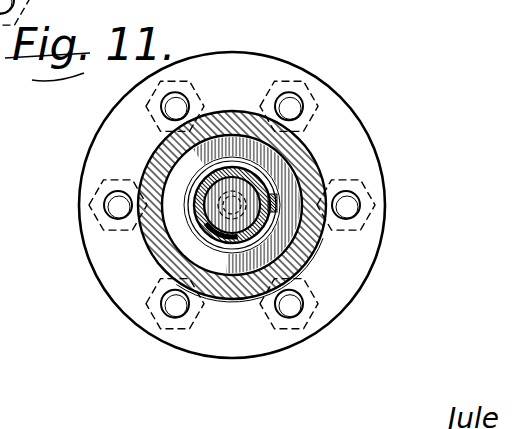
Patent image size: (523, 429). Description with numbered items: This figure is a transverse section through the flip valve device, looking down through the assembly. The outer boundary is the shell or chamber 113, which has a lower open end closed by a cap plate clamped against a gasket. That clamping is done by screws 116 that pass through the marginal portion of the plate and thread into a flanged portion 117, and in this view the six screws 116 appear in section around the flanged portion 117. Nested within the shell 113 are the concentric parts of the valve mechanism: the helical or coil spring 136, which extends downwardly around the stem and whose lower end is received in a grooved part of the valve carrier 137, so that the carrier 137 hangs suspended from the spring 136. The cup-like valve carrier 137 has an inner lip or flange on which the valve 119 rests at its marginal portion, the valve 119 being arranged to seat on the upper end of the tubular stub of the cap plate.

The shell or chamber 113 is at (306, 247).
The screws 116 is at (348, 204).
The flanged portion 117 is at (358, 158).
The valve 119 is at (220, 219).
The helical or coil spring 136 is at (262, 176).
The valve carrier 137 is at (228, 237).